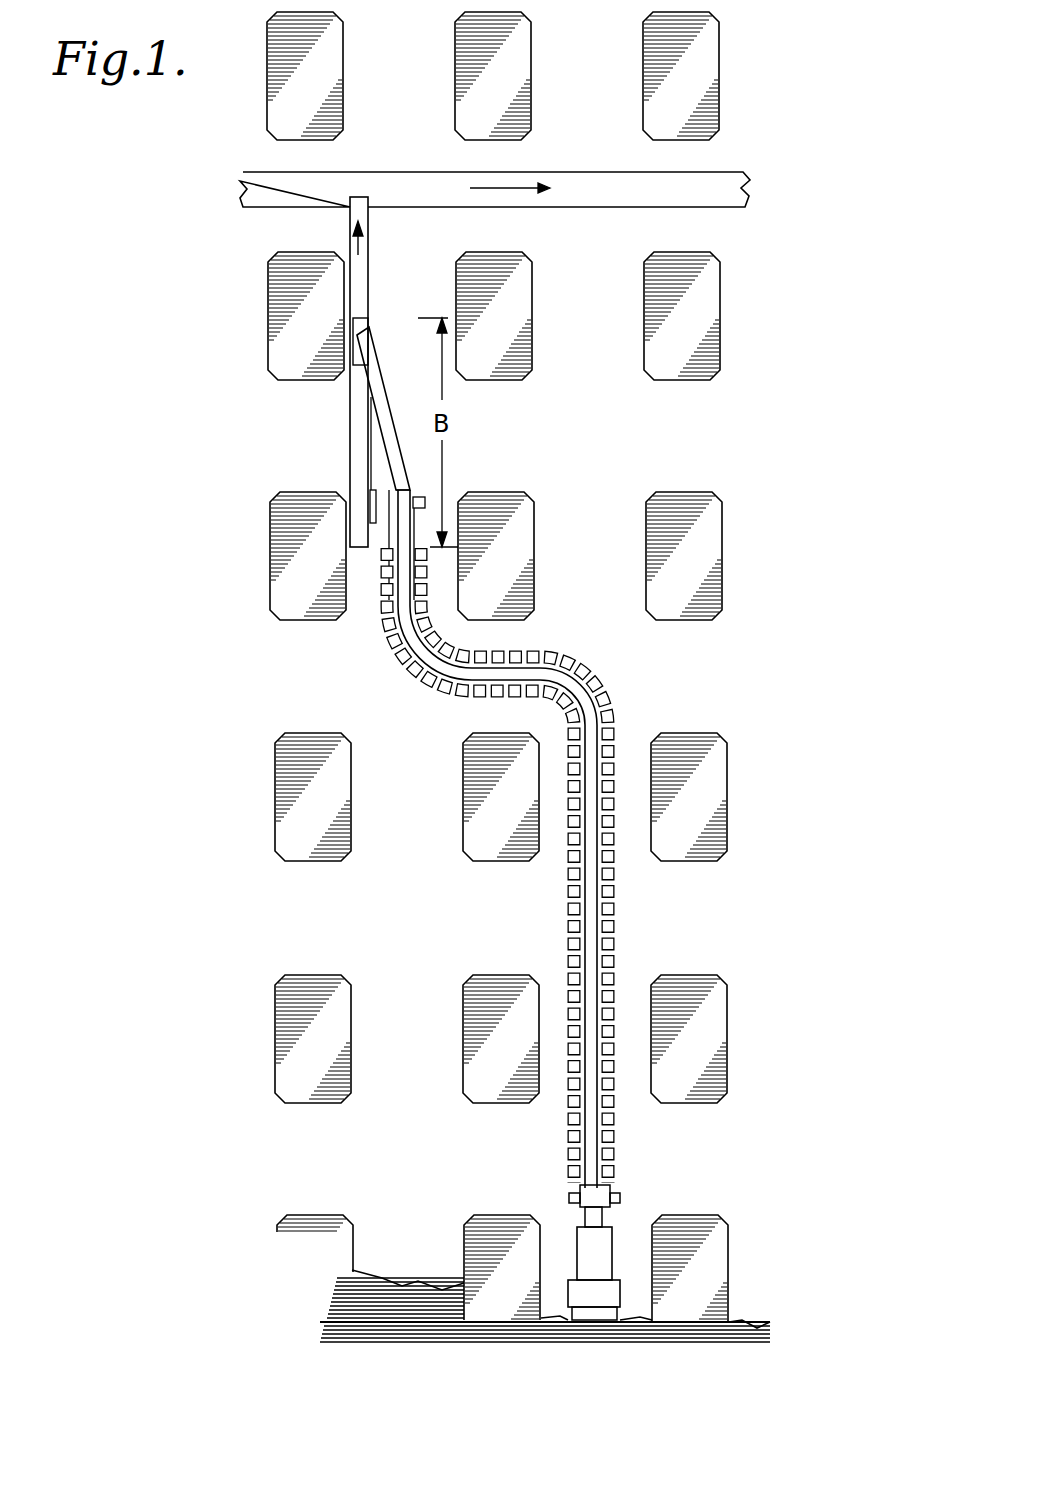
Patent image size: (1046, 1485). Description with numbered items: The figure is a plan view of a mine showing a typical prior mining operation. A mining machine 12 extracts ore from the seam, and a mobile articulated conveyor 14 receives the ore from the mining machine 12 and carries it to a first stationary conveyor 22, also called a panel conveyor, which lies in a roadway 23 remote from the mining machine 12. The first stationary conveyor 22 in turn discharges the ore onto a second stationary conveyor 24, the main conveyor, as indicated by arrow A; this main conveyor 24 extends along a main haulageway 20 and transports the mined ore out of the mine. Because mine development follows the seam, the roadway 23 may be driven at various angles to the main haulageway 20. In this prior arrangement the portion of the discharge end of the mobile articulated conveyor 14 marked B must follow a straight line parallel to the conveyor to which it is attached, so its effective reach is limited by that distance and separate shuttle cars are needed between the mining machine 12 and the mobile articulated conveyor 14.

The mining machine 12 is at (606, 1282).
The mobile articulated conveyor 14 is at (547, 679).
The main haulageway 20 is at (828, 253).
The first stationary conveyor 22 is at (358, 423).
The roadway 23 is at (430, 279).
The second stationary conveyor 24 is at (642, 187).